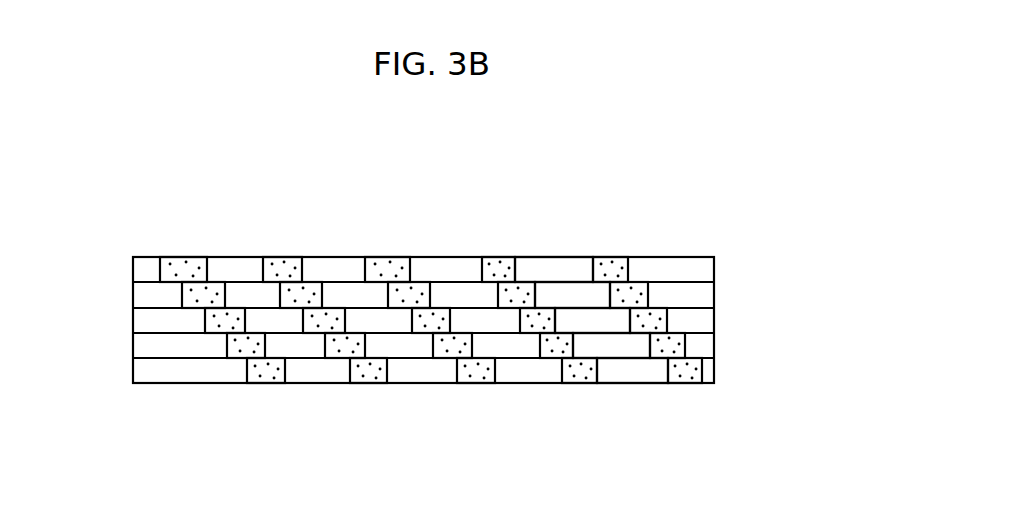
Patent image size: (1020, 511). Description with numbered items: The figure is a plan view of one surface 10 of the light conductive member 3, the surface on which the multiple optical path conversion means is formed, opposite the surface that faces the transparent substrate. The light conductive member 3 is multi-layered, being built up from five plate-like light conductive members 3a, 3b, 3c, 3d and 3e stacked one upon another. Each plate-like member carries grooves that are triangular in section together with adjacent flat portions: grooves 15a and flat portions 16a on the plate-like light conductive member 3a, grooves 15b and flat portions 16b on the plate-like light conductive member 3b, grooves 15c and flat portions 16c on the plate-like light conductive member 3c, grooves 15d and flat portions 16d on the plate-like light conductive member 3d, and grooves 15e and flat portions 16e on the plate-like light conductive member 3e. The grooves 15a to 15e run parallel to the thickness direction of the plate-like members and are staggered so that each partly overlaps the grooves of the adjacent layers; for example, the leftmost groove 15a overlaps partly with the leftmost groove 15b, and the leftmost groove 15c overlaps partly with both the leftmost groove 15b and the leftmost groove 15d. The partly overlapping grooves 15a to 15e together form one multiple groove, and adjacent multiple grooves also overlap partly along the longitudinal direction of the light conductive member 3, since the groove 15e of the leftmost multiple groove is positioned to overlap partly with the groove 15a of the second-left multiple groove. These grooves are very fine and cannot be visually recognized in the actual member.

The light conductive member 3 is at (648, 250).
The plate-like light conductive member 3a is at (714, 268).
The plate-like light conductive member 3b is at (714, 293).
The plate-like light conductive member 3c is at (714, 317).
The plate-like light conductive member 3d is at (714, 343).
The plate-like light conductive member 3e is at (714, 365).
The surface 10 is at (148, 349).
The groove 15a is at (180, 258).
The groove 15b is at (220, 290).
The groove 15c is at (220, 323).
The groove 15d is at (242, 350).
The groove 15e is at (268, 377).
The flat portion 16a is at (533, 258).
The flat portion 16b is at (565, 295).
The flat portion 16c is at (600, 322).
The flat portion 16d is at (630, 345).
The flat portion 16e is at (653, 373).